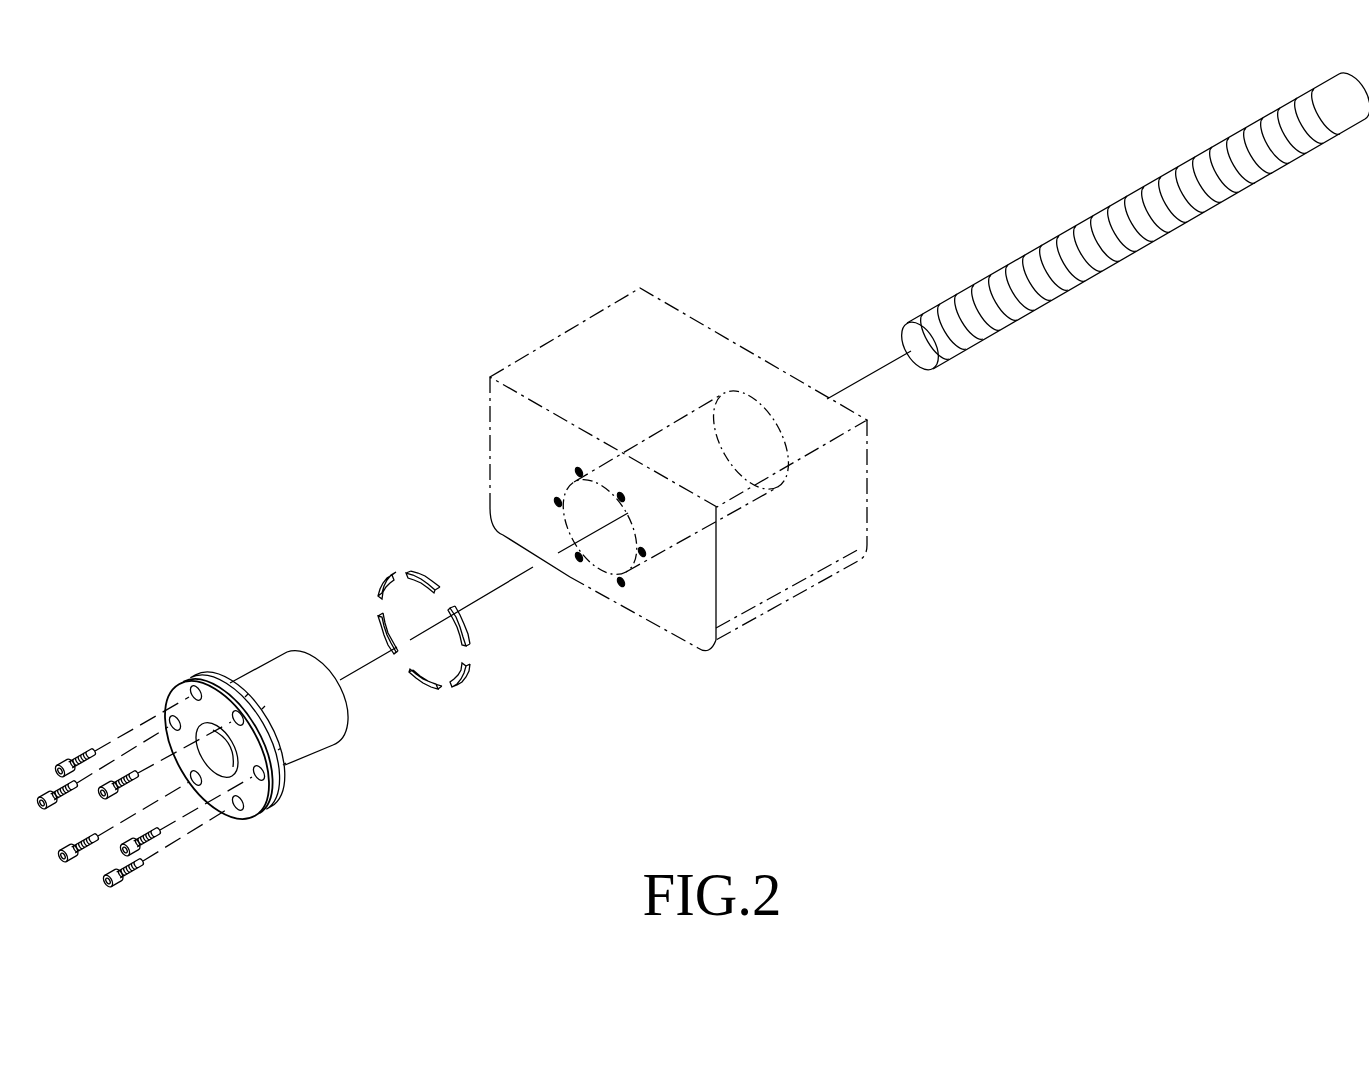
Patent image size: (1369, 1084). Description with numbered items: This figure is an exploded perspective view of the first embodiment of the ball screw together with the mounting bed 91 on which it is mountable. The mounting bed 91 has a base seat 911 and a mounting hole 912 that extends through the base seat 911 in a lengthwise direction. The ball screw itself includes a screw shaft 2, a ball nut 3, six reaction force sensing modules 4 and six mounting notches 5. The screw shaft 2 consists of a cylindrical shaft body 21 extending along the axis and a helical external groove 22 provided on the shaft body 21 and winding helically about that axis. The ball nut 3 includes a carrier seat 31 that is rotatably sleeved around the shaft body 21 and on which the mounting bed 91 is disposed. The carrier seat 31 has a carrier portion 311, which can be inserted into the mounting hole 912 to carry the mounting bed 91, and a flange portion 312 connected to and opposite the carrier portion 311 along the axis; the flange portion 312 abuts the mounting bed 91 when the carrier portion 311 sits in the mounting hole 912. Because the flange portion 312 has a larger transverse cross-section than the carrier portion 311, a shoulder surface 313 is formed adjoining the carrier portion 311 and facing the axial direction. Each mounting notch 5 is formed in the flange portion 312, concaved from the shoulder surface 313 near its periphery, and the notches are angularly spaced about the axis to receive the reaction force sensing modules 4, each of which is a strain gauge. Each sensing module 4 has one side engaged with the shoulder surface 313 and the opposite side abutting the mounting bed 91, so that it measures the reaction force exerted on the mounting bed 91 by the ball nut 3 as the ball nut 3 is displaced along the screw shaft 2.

The screw shaft 2 is at (1131, 241).
The shaft body 21 is at (1080, 273).
The helical external groove 22 is at (1113, 247).
The ball nut 3 is at (293, 737).
The carrier seat 31 is at (291, 713).
The carrier portion 311 is at (277, 673).
The flange portion 312 is at (185, 712).
The shoulder surface 313 is at (266, 703).
The reaction force sensing modules 4 is at (419, 554).
The mounting notches 5 is at (231, 667).
The mounting bed 91 is at (678, 462).
The base seat 911 is at (793, 568).
The mounting hole 912 is at (606, 572).